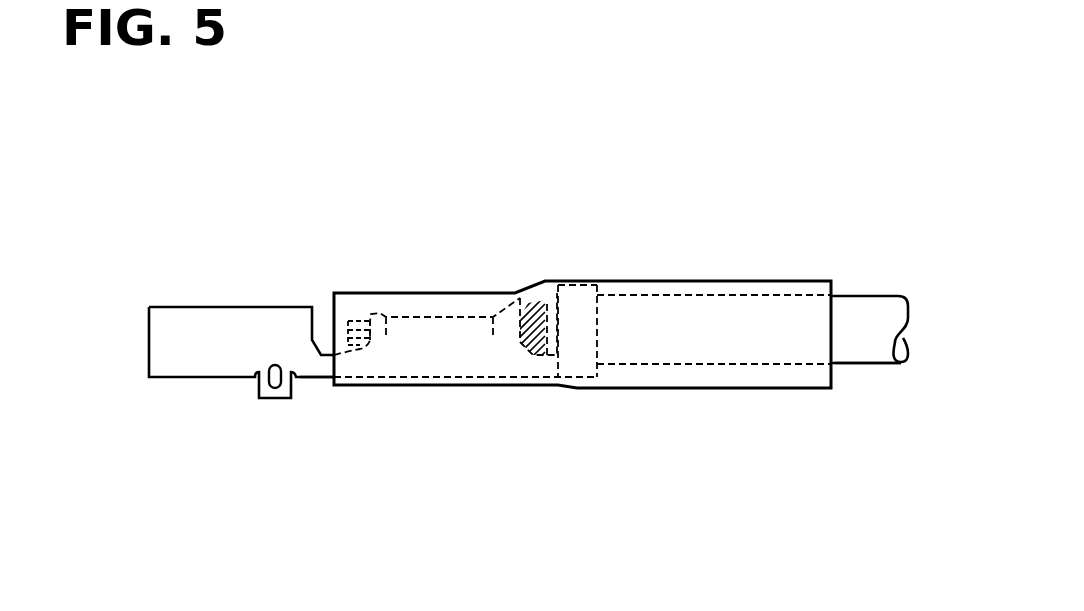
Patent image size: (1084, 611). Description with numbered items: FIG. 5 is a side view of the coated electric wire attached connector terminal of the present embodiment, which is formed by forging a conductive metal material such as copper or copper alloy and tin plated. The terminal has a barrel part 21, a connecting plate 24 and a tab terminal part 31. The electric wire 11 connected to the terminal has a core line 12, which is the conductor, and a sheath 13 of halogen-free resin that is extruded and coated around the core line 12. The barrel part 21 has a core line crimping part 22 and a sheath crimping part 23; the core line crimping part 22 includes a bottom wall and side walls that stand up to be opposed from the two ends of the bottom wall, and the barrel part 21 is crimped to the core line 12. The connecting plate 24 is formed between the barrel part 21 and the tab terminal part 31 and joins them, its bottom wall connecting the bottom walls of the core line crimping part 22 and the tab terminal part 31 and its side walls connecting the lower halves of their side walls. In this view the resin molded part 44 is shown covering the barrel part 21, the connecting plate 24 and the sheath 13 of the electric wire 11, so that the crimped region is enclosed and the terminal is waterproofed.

The electric wire 11 is at (868, 292).
The core line 12 is at (535, 321).
The sheath 13 is at (863, 367).
The barrel part 21 is at (489, 342).
The core line crimping part 22 is at (398, 347).
The sheath crimping part 23 is at (573, 347).
The connecting plate 24 is at (325, 367).
The tab terminal part 31 is at (224, 303).
The housing 44 is at (391, 293).